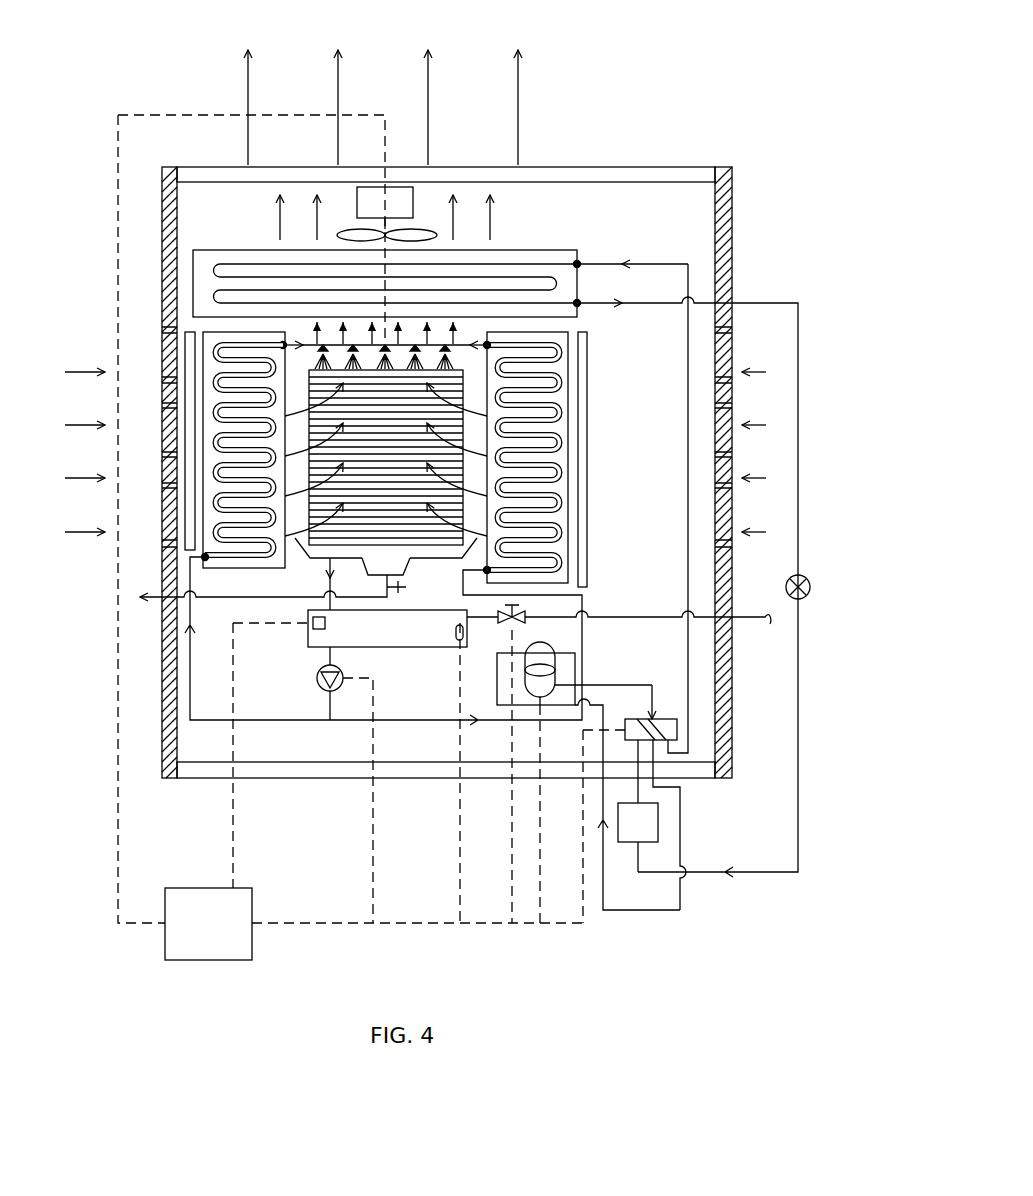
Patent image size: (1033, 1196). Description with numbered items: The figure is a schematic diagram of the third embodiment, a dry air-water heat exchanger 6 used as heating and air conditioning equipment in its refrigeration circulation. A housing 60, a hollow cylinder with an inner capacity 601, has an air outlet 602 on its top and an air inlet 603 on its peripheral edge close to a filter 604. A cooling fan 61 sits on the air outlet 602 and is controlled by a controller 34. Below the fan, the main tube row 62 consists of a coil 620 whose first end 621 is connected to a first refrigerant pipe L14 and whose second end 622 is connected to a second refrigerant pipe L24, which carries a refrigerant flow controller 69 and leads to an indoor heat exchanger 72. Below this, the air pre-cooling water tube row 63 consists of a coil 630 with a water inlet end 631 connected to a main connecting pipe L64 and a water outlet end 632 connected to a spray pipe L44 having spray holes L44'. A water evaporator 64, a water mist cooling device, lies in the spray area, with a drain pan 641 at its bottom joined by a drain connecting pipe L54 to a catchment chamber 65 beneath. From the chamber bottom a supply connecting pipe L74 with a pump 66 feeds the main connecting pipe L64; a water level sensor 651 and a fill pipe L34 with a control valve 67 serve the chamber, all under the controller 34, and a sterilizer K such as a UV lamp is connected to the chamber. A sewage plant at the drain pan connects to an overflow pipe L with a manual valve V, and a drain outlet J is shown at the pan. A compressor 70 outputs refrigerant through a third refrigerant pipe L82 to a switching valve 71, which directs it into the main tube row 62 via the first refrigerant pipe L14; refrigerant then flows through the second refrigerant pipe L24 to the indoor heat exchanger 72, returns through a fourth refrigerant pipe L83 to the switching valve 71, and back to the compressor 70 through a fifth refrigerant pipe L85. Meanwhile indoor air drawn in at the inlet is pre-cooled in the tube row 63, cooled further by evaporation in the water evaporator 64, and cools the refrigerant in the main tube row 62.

The dry air-water heat exchanger 6 is at (596, 112).
The housing 60 is at (160, 263).
The inner capacity 601 is at (220, 215).
The air outlet 602 is at (325, 167).
The air inlet 603 is at (165, 375).
The filter 604 is at (183, 357).
The cooling fan 61 is at (413, 195).
The main tube row 62 is at (530, 250).
The coil 620 is at (548, 263).
The first end 621 is at (579, 265).
The second end 622 is at (579, 304).
The air pre-cooling water tube row 63 is at (203, 443).
The coil 630 is at (220, 383).
The water inlet end 631 is at (203, 556).
The water outlet end 632 is at (281, 345).
The water evaporator 64 is at (463, 398).
The drain pan 641 is at (310, 560).
The catchment chamber 65 is at (390, 648).
The water level sensor 651 is at (456, 640).
The pump 66 is at (326, 692).
The control valve 67 is at (525, 618).
The refrigerant flow controller 69 is at (797, 600).
The compressor 70 is at (556, 660).
The switching valve 71 is at (677, 732).
The indoor heat exchanger 72 is at (630, 842).
The controller 34 is at (205, 888).
The overflow pipe L is at (227, 597).
The first refrigerant pipe L14 is at (656, 262).
The second refrigerant pipe L24 is at (757, 302).
The fill pipe L34 is at (752, 614).
The spray pipe L44 is at (295, 236).
The spray hole L44' is at (382, 237).
The drain connecting pipe L54 is at (323, 600).
The main connecting pipe L64 is at (217, 720).
The supply connecting pipe L74 is at (330, 655).
The third refrigerant pipe L82 is at (654, 688).
The fourth refrigerant pipe L83 is at (655, 787).
The fifth refrigerant pipe L85 is at (645, 912).
The drain outlet J is at (410, 573).
The sterilizer K is at (317, 630).
The manual valve V is at (405, 587).